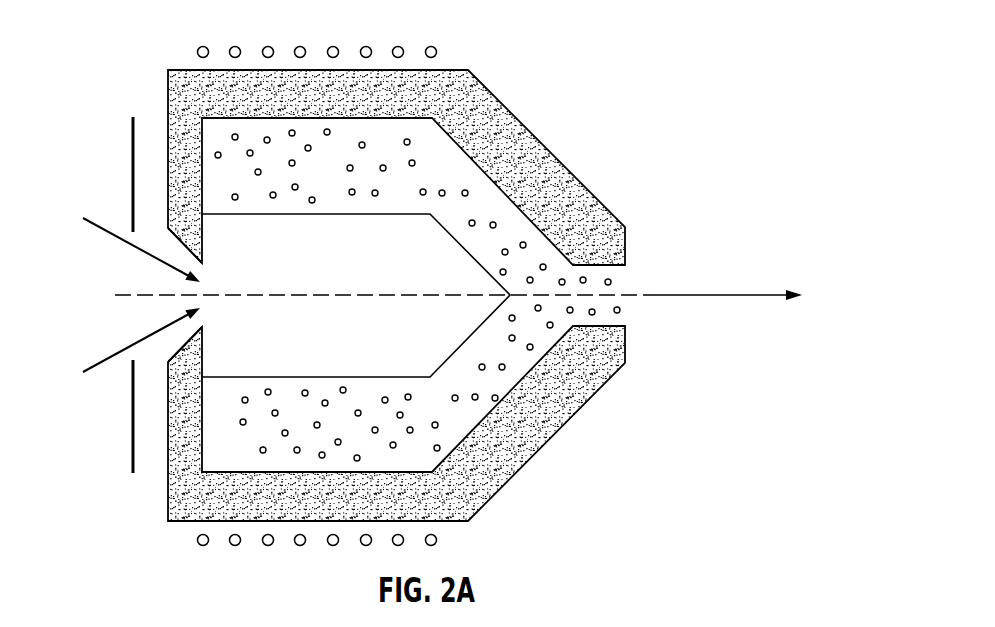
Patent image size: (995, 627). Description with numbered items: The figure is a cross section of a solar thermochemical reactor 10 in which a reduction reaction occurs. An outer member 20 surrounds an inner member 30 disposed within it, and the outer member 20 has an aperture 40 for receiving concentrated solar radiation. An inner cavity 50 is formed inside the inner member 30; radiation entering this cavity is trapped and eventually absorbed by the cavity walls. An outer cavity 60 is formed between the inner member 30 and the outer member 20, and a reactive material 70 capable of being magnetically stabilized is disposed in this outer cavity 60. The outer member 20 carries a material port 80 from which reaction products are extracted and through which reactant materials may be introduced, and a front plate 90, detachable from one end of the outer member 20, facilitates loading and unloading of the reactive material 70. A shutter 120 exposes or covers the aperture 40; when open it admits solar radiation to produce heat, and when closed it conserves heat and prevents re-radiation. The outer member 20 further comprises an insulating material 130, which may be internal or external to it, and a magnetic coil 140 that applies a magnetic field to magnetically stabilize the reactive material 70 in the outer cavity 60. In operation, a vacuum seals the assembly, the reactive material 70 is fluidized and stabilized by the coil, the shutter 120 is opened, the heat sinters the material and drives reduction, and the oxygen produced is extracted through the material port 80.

The solar thermochemical reactor 10 is at (106, 442).
The outer member 20 is at (407, 277).
The inner member 30 is at (423, 324).
The aperture 40 is at (197, 292).
The inner cavity 50 is at (403, 360).
The outer cavity 60 is at (453, 173).
The reactive material 70 is at (412, 143).
The material port 80 is at (613, 266).
The front plate 90 is at (178, 248).
The shutter 120 is at (122, 156).
The insulating material 130 is at (372, 100).
The magnetic coil 140 is at (237, 43).